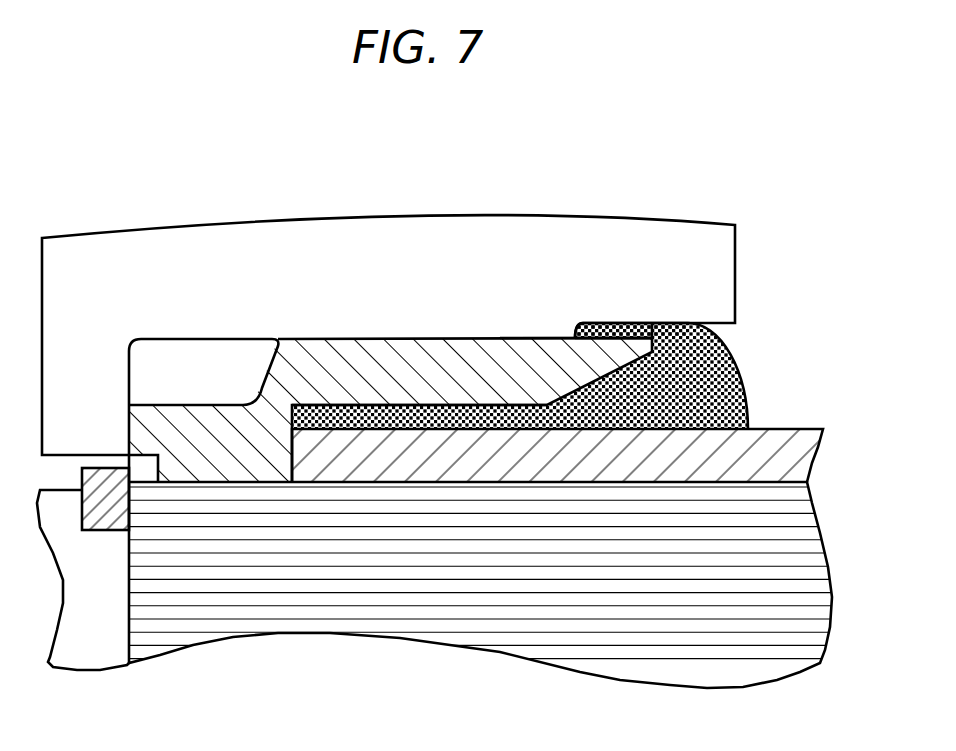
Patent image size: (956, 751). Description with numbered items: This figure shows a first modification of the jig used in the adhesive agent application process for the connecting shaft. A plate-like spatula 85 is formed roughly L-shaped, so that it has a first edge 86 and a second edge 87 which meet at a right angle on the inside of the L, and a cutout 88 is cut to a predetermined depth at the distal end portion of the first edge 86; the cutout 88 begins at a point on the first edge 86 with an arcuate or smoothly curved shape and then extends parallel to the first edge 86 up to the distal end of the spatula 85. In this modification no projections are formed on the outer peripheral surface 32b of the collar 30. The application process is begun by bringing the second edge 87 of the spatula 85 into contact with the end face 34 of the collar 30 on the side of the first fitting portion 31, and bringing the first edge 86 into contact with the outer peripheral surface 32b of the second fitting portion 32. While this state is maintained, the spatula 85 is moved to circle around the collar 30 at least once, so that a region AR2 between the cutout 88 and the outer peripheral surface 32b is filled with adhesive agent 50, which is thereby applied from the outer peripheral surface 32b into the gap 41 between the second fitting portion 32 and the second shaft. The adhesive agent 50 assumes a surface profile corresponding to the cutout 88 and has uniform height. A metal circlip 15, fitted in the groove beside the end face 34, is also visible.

The circlip 15 is at (80, 518).
The collar 30 is at (369, 377).
The first fitting portion 31 is at (197, 414).
The second fitting portion 32 is at (492, 360).
The outer peripheral surface 32b is at (517, 337).
The end face 34 is at (128, 432).
The gap 41 is at (419, 417).
The adhesive agent 50 is at (722, 387).
The spatula 85 is at (440, 214).
The first edge 86 is at (256, 339).
The second edge 87 is at (129, 375).
The cutout 88 is at (630, 328).
The region AR2 is at (665, 337).